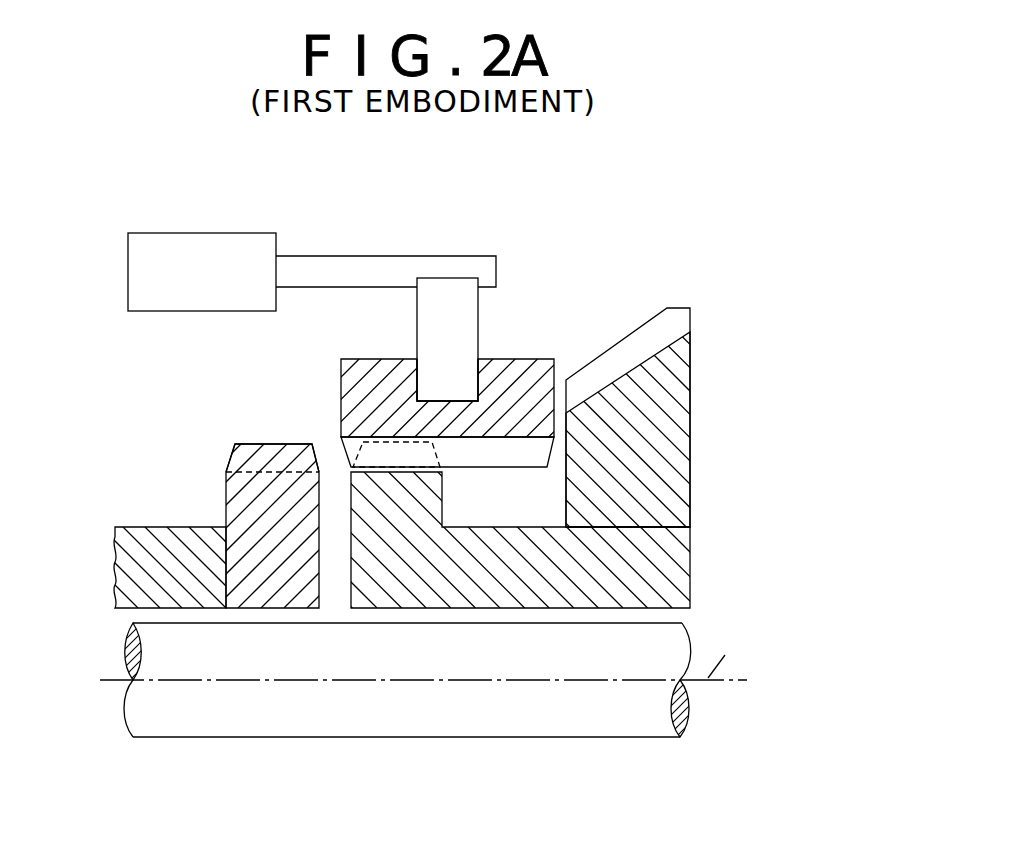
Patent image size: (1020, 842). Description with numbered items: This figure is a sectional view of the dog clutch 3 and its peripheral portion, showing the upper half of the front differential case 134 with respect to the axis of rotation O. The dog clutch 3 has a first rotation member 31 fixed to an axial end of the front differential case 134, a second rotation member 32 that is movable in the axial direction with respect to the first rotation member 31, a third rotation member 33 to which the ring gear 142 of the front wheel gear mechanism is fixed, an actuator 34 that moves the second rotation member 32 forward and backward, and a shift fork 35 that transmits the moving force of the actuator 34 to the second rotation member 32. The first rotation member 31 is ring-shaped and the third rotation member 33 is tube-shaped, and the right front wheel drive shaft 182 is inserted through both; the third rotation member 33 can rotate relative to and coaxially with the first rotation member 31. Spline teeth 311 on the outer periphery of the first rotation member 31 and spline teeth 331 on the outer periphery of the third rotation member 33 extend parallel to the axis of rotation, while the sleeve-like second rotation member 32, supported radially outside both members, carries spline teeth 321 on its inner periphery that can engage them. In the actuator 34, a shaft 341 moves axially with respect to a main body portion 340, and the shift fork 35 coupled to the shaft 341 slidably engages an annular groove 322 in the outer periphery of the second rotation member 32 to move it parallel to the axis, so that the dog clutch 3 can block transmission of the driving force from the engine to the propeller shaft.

The dog clutch 3 is at (449, 491).
The first rotation member 31 is at (274, 502).
The spline teeth 311 is at (275, 453).
The second rotation member 32 is at (454, 401).
The spline teeth 321 is at (483, 458).
The annular groove 322 is at (425, 383).
The third rotation member 33 is at (508, 572).
The spline teeth 331 is at (343, 437).
The actuator 34 is at (295, 230).
The main body portion 340 is at (198, 238).
The shaft 341 is at (346, 262).
The shift fork 35 is at (470, 320).
The front differential case 134 is at (158, 535).
The ring gear 142 is at (687, 428).
The right front wheel drive shaft 182 is at (585, 733).